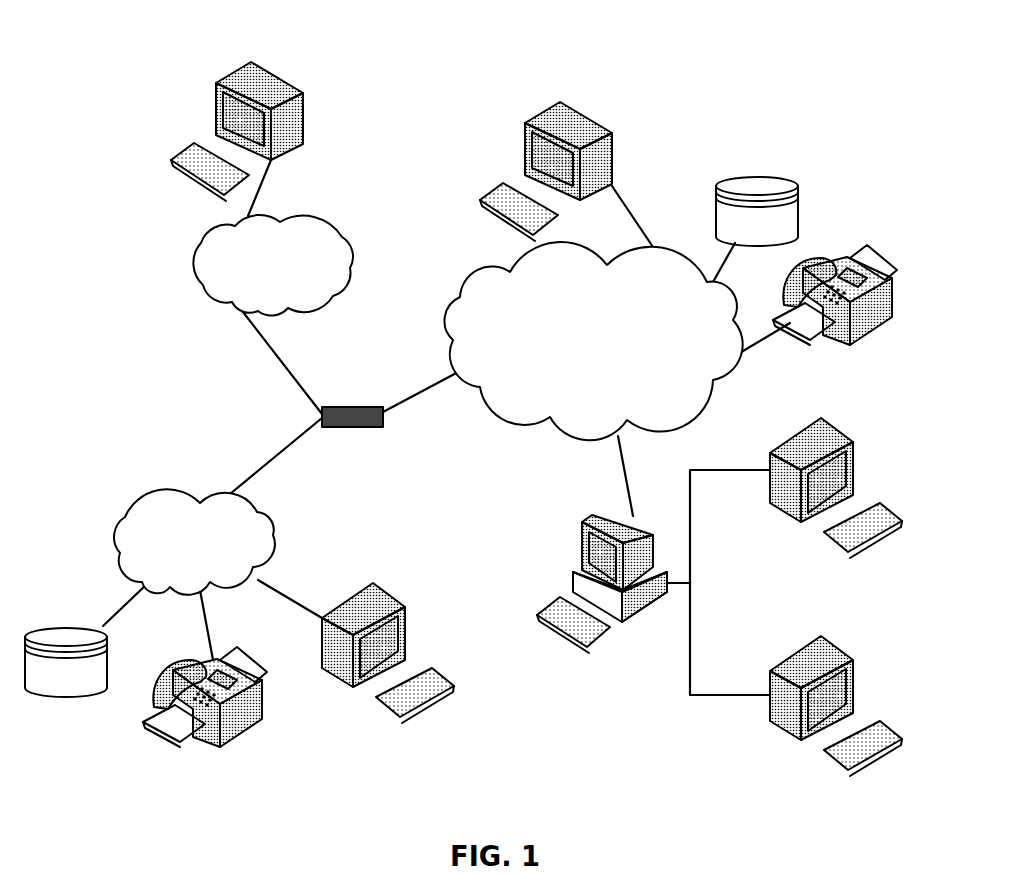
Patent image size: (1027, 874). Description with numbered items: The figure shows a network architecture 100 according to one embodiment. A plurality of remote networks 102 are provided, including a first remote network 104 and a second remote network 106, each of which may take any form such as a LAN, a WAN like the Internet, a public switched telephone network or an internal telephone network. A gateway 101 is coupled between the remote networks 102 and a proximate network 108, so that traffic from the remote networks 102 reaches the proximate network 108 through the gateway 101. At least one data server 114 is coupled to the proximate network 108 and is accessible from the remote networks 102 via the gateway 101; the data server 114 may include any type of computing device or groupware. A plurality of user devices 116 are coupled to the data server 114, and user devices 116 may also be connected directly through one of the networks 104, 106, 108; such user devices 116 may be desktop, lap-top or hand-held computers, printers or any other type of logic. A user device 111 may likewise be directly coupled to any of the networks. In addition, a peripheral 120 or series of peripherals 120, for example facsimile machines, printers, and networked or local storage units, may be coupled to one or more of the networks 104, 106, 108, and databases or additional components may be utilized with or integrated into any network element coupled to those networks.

The architecture 100 is at (146, 45).
The gateway 101 is at (335, 406).
The remote networks 102 is at (176, 321).
The first remote network 104 is at (124, 517).
The second remote network 106 is at (345, 238).
The proximate network 108 is at (706, 404).
The user device 111 is at (612, 134).
The data server 114 is at (582, 535).
The user devices 116 is at (303, 93).
The peripheral 120 is at (798, 185).